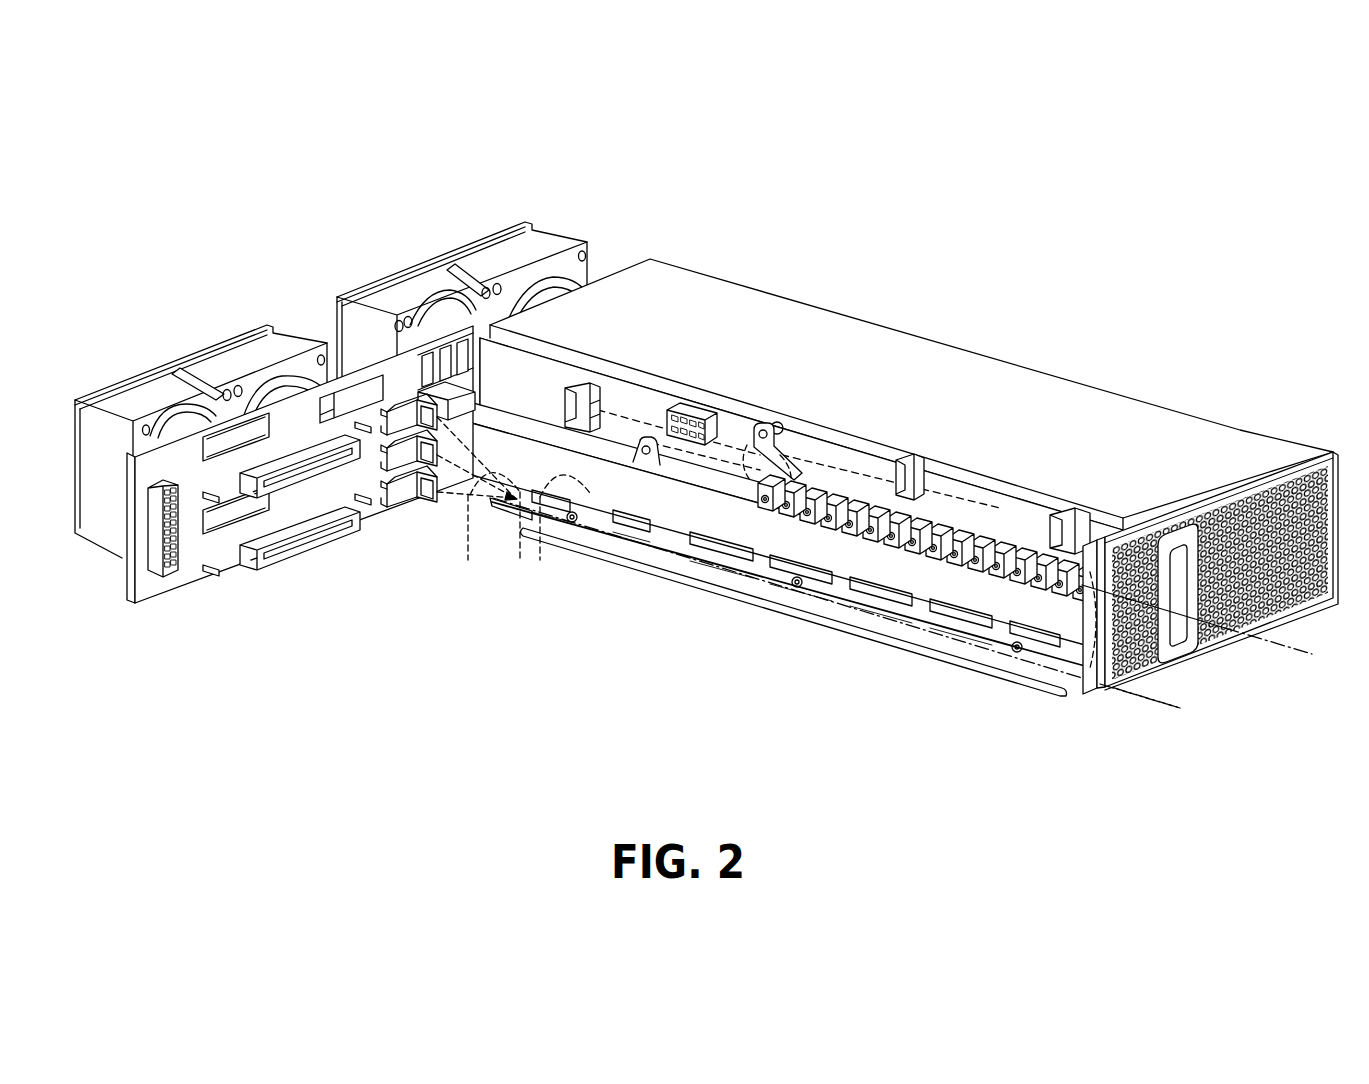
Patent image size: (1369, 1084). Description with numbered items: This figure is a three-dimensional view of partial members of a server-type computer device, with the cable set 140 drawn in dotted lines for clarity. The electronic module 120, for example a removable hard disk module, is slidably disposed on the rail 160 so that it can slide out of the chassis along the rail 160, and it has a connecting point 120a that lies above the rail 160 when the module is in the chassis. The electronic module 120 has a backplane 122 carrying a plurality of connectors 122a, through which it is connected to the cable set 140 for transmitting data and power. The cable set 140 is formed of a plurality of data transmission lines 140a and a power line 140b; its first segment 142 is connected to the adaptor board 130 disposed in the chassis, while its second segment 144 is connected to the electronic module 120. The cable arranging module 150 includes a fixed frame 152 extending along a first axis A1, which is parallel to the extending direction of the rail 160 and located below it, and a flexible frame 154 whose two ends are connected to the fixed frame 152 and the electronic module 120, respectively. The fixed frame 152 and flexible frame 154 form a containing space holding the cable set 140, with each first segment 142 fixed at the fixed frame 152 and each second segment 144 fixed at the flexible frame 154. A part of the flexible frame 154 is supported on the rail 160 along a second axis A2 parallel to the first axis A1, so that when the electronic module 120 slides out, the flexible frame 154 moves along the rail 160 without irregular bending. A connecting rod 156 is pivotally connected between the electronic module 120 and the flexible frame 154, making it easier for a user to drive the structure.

The electronic module 120 is at (1233, 445).
The connecting point 120a is at (792, 410).
The backplane 122 is at (560, 372).
The connectors 122a is at (587, 395).
The adaptor board 130 is at (189, 588).
The cable set 140 is at (489, 557).
The data transmission lines 140a is at (470, 485).
The power line 140b is at (597, 486).
The first segment 142 is at (735, 588).
The second segment 144 is at (866, 542).
The cable arranging module 150 is at (945, 716).
The fixed frame 152 is at (1071, 699).
The flexible frame 154 is at (1113, 600).
The connecting rod 156 is at (778, 413).
The rail 160 is at (641, 507).
The first axis A1 is at (1148, 702).
The second axis A2 is at (1301, 656).